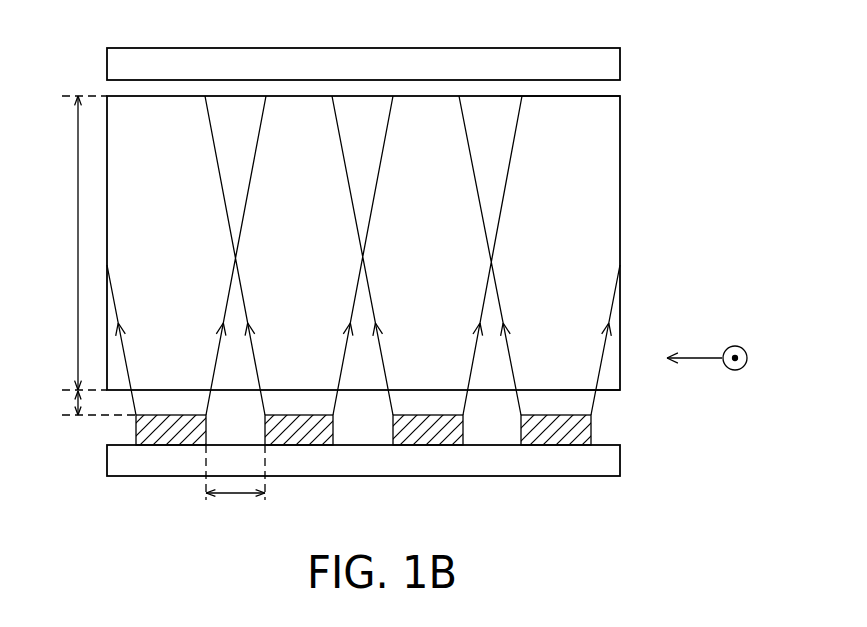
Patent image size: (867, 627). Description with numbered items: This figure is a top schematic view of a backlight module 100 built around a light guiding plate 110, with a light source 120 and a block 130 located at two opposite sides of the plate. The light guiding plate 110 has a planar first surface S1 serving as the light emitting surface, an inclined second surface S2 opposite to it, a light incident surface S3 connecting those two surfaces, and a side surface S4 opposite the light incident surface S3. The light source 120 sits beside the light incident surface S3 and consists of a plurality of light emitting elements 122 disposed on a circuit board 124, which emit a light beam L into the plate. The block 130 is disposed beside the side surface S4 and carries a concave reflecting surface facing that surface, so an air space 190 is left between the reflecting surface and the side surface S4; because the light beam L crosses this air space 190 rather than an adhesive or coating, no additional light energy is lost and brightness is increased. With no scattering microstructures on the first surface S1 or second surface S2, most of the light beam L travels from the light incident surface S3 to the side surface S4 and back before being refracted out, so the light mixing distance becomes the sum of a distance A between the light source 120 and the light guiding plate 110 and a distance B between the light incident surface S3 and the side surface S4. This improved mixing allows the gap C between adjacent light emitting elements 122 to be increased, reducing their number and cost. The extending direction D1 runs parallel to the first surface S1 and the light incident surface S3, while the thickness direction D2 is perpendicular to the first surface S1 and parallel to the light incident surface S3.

The backlight module 100 is at (633, 498).
The light guiding plate 110 is at (607, 152).
The light source 120 is at (691, 437).
The light emitting elements 122 is at (585, 428).
The circuit board 124 is at (612, 460).
The block 130 is at (610, 63).
The air space 190 is at (135, 92).
The first surface S1 is at (587, 256).
The second surface S2 is at (598, 277).
The light incident surface S3 is at (611, 392).
The side surface S4 is at (563, 96).
The light beam L is at (363, 255).
The distance between the light source and the light guiding plate A is at (93, 403).
The distance between the light incident surface and the side surface B is at (82, 243).
The gap between light emitting elements C is at (235, 486).
The extending direction D1 is at (679, 358).
The thickness direction D2 is at (755, 358).